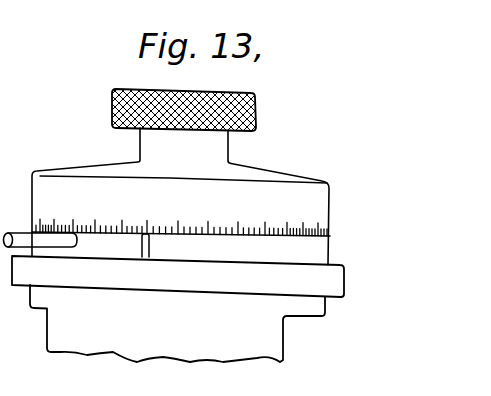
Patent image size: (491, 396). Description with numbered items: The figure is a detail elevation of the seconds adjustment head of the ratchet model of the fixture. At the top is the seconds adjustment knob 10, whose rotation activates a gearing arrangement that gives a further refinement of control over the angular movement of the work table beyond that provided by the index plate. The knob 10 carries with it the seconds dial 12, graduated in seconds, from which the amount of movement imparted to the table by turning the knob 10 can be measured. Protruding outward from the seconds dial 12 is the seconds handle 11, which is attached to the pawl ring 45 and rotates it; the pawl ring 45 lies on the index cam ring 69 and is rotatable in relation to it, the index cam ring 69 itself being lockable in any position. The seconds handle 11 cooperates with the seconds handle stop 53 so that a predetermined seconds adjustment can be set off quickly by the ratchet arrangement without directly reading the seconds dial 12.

The seconds adjustment knob 10 is at (112, 100).
The seconds handle 11 is at (17, 233).
The seconds dial 12 is at (70, 167).
The pawl ring 45 is at (318, 253).
The seconds handle stop 53 is at (149, 250).
The index cam ring 69 is at (337, 290).